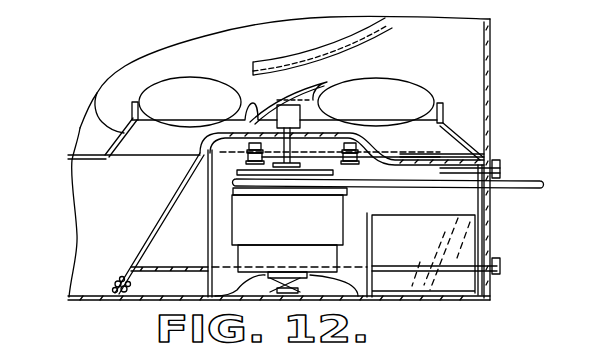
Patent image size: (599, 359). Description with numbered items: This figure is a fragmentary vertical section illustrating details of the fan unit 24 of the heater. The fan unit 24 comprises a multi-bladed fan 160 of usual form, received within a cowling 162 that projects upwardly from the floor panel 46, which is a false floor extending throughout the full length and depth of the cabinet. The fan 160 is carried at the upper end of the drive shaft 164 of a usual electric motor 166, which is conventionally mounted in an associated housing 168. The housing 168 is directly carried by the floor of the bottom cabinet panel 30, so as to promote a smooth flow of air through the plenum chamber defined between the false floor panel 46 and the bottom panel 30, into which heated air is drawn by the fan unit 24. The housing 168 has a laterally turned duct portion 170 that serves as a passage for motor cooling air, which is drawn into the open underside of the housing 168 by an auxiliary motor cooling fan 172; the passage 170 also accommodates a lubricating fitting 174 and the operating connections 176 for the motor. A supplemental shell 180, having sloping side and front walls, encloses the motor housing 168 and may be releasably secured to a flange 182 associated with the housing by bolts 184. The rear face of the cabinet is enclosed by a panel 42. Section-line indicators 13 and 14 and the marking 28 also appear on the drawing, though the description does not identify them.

The section line 13- 13 is at (443, 134).
The section line 14- 14 is at (121, 64).
The fan unit 24 is at (420, 90).
The air duct 28 is at (330, 48).
The lower section 30 is at (385, 305).
The panel 42 is at (91, 205).
The floor panel 46 is at (79, 127).
The multi-bladed fan 160 is at (218, 83).
The cowling 162 is at (94, 97).
The drive shaft 164 is at (302, 112).
The electric motor 166 is at (300, 228).
The housing 168 is at (393, 236).
The duct portion 170 is at (462, 213).
The auxiliary motor cooling fan 172 is at (246, 280).
The lubricating fitting 174 is at (500, 169).
The operating connections 176 is at (545, 186).
The supplemental shell 180 is at (176, 178).
The flange 182 is at (180, 265).
The bolts 184 is at (124, 281).